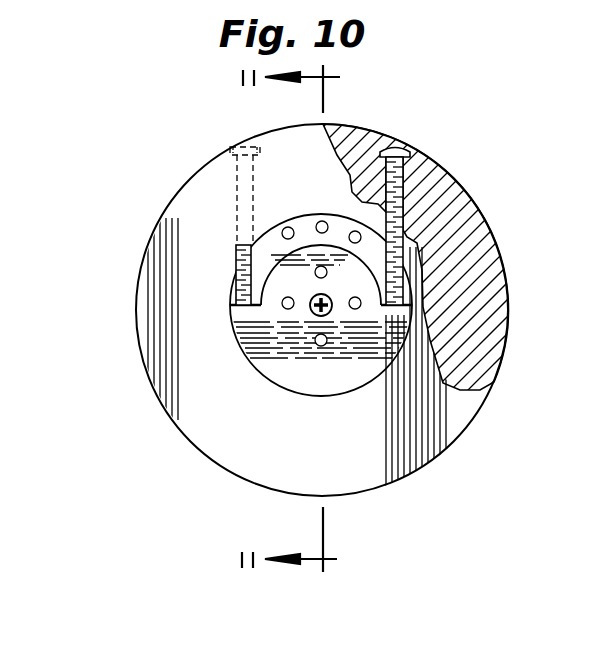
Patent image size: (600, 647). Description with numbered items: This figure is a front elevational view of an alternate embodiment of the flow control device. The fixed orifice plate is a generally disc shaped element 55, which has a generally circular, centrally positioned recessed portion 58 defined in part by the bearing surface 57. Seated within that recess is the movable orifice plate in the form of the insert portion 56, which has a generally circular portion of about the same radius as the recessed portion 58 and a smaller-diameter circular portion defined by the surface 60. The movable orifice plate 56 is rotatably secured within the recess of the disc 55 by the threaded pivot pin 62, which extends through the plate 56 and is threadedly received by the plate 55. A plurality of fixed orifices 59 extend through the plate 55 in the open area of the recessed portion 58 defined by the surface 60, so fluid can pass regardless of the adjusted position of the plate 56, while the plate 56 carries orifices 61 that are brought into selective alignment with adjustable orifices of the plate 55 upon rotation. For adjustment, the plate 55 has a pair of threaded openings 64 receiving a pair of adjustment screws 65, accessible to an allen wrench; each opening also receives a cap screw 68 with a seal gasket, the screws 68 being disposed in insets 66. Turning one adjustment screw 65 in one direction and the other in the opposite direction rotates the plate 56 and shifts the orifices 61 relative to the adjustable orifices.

The fixed orifice plate 55 is at (463, 403).
The movable orifice plate 56 is at (353, 370).
The bearing surface 57 is at (345, 227).
The recessed portion 58 is at (287, 227).
The fixed orifices 59 is at (300, 213).
The surface 60 is at (240, 257).
The orifices 61 is at (315, 341).
The threaded pivot pin 62 is at (331, 298).
The threaded openings 64 is at (403, 217).
The adjustment screws 65 is at (400, 280).
The insets 66 is at (255, 142).
The cap screw 68 is at (243, 150).